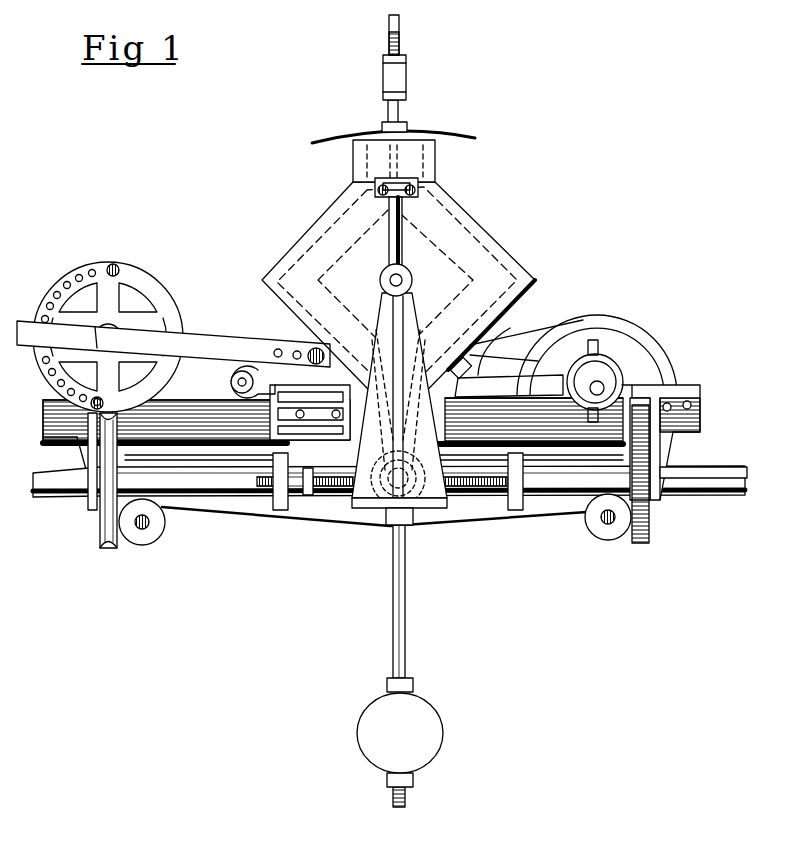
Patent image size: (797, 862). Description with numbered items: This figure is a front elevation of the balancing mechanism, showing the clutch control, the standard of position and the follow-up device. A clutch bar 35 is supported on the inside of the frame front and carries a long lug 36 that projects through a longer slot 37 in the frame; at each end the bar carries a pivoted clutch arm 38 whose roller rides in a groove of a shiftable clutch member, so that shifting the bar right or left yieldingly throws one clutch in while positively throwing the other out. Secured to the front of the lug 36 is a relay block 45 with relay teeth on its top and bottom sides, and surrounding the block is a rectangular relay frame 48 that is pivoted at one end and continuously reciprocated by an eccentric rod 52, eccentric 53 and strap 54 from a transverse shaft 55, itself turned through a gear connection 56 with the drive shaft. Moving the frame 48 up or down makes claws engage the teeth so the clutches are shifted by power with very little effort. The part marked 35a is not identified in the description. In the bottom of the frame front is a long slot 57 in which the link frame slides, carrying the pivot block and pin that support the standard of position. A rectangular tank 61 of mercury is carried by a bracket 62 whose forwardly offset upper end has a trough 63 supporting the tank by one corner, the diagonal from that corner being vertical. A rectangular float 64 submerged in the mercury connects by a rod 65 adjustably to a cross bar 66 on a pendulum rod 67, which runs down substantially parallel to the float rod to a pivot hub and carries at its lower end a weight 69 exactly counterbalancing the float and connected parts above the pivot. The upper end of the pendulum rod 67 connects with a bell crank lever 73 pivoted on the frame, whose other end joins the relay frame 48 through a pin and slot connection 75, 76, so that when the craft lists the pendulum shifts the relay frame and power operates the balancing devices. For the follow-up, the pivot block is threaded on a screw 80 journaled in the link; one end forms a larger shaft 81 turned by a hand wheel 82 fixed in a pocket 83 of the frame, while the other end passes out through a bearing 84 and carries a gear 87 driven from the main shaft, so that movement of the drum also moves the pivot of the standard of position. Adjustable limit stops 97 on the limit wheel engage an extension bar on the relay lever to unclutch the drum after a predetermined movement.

The clutch bar 35 is at (360, 135).
The housing 35a is at (438, 160).
The long lug 36 is at (166, 306).
The longer slot 37 is at (275, 418).
The clutch arm 38 is at (173, 344).
The relay block 45 is at (327, 415).
The relay frame 48 is at (278, 492).
The eccentric rod 52 is at (534, 408).
The eccentric 53 is at (575, 372).
The strap 54 is at (620, 370).
The transverse shaft 55 is at (598, 384).
The gear connection 56 is at (597, 355).
The long slot 57 is at (207, 512).
The rectangular tank 61 is at (460, 233).
The bracket 62 is at (412, 442).
The trough 63 is at (450, 365).
The rectangular float 64 is at (450, 272).
The float rod 65 is at (400, 110).
The cross bar 66 is at (406, 80).
The pendulum rod 67 is at (400, 27).
The weight 69 is at (400, 732).
The bell crank lever 73 is at (312, 350).
The pin 75 is at (235, 378).
The slot 76 is at (230, 383).
The screw 80 is at (566, 485).
The shaft 81 is at (68, 492).
The hand wheel 82 is at (97, 535).
The pocket 83 is at (113, 452).
The bearing 84 is at (672, 460).
The gear 87 is at (652, 520).
The adjustable limit stops 97 is at (120, 268).